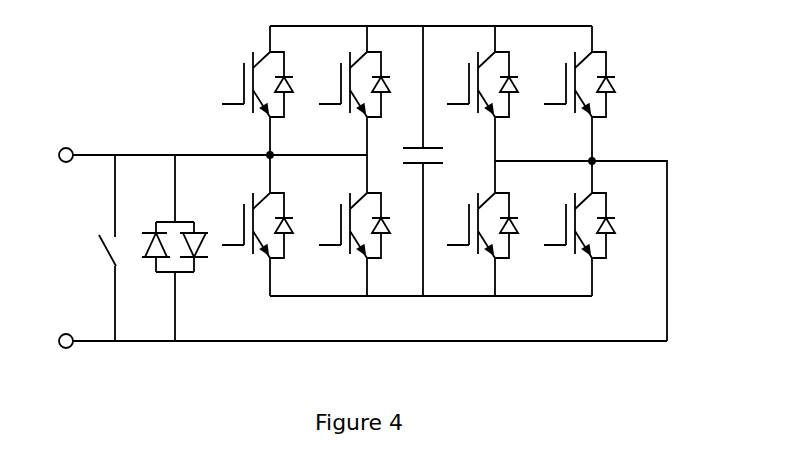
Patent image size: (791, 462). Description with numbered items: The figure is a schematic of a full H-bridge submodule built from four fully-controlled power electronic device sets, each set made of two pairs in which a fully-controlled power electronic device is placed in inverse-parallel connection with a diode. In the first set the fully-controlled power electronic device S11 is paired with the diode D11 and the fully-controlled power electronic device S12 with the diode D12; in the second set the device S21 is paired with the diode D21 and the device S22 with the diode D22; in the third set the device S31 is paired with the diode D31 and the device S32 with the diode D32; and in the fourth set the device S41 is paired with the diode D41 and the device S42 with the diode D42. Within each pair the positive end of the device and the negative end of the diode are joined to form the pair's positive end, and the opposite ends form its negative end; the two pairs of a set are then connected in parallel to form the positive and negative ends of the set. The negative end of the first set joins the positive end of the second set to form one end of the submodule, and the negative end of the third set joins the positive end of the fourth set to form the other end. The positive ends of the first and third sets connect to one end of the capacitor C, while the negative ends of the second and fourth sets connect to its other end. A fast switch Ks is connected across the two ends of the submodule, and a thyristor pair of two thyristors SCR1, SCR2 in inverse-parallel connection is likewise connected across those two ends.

The fast switch Ks is at (97, 250).
The thyristor SCR1 is at (151, 264).
The thyristor SCR2 is at (195, 229).
The capacitor C is at (423, 144).
The fully-controlled power electronic device S11 is at (245, 84).
The fully-controlled power electronic device S12 is at (341, 84).
The fully-controlled power electronic device S21 is at (245, 225).
The fully-controlled power electronic device S22 is at (341, 225).
The fully-controlled power electronic device S31 is at (469, 84).
The fully-controlled power electronic device S32 is at (565, 84).
The fully-controlled power electronic device S41 is at (469, 225).
The fully-controlled power electronic device S42 is at (566, 225).
The diode D11 is at (292, 84).
The diode D12 is at (389, 84).
The diode D21 is at (292, 225).
The diode D22 is at (389, 225).
The diode D31 is at (517, 84).
The diode D32 is at (614, 84).
The diode D41 is at (517, 225).
The diode D42 is at (614, 226).